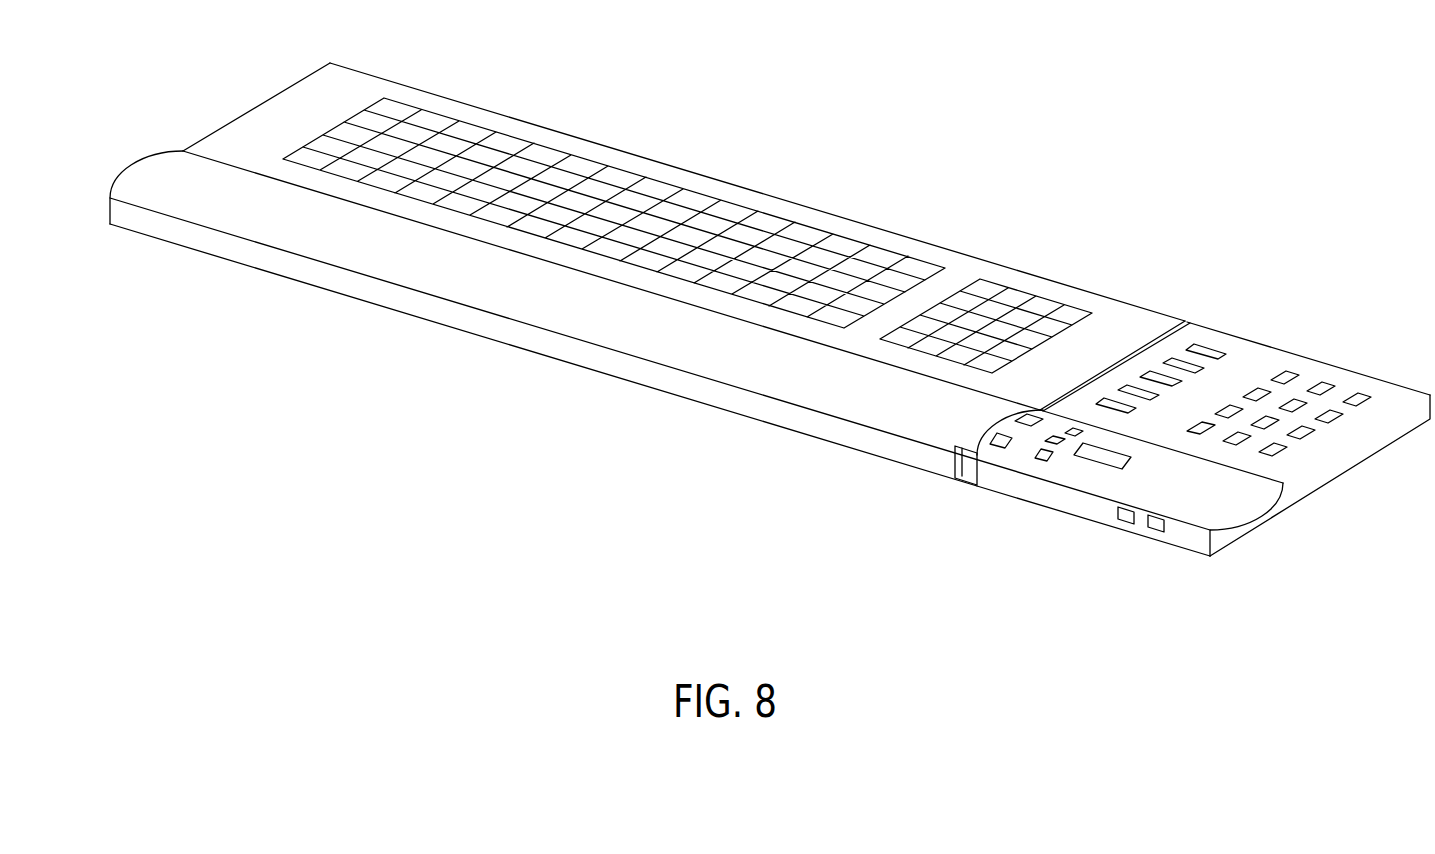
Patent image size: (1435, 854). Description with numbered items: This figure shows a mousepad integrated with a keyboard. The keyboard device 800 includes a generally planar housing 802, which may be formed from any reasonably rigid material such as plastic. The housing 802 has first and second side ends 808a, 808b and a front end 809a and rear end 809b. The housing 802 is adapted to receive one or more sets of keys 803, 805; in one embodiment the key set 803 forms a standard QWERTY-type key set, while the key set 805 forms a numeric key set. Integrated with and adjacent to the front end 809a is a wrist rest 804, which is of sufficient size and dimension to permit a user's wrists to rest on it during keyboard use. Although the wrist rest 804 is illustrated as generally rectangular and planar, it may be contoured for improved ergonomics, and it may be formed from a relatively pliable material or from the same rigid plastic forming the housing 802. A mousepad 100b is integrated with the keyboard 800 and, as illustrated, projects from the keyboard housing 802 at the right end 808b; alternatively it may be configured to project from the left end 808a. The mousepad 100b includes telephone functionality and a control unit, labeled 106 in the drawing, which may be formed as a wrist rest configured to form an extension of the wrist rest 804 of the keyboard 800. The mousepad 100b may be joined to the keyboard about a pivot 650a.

The keyboard device 800 is at (822, 82).
The housing 802 is at (877, 240).
The key set 803 is at (488, 163).
The wrist rest 804 is at (858, 389).
The key set 805 is at (1040, 303).
The first side end 808a is at (231, 120).
The second side end 808b is at (1128, 358).
The front end 809a is at (570, 347).
The rear end 809b is at (717, 178).
The mousepad 100b is at (1268, 339).
The device housing 106 is at (1042, 492).
The pivot 650a is at (955, 480).